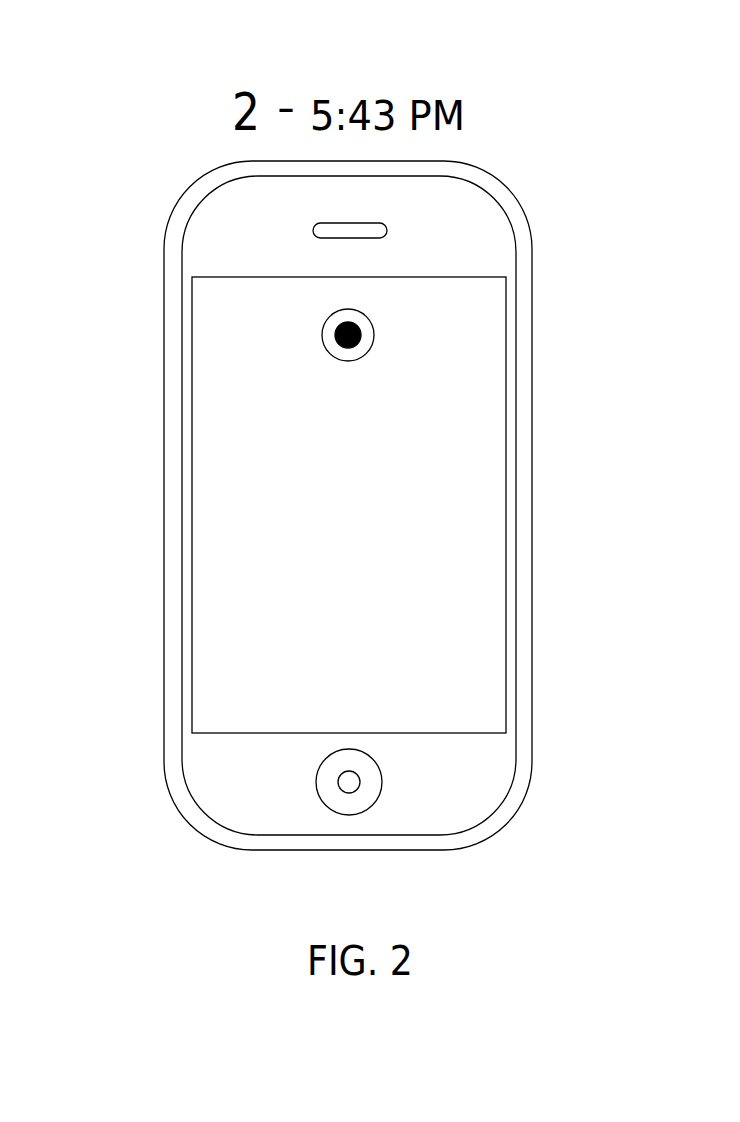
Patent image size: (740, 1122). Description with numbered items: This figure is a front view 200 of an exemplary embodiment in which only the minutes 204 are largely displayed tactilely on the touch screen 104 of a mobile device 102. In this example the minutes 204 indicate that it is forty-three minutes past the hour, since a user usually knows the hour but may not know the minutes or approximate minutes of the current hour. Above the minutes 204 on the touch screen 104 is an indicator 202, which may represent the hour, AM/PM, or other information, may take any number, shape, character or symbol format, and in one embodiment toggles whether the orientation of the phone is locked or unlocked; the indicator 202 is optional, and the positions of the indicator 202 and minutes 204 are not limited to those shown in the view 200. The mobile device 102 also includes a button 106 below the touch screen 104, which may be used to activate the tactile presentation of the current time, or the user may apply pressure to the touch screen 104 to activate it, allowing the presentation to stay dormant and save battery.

The front view 200 is at (183, 58).
The mobile device 102 is at (182, 216).
The touch screen 104 is at (212, 321).
The button 106 is at (330, 793).
The indicator 202 is at (361, 333).
The minutes 204 is at (251, 512).